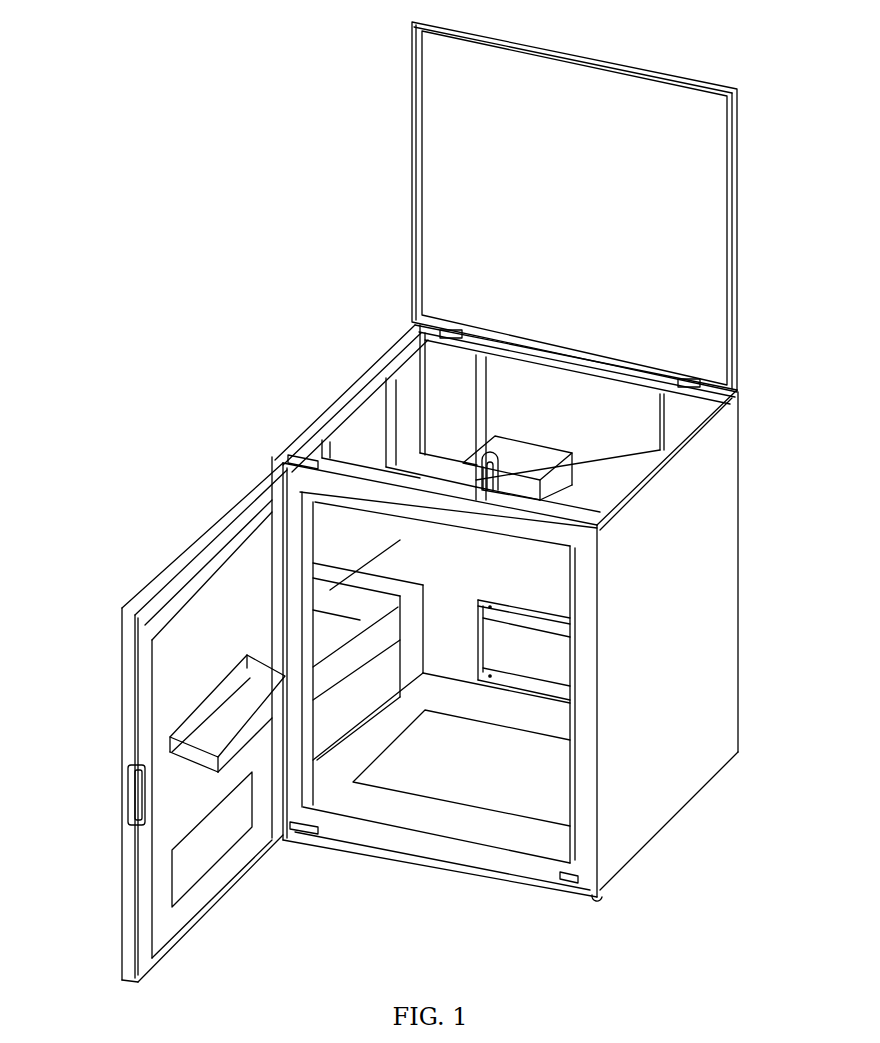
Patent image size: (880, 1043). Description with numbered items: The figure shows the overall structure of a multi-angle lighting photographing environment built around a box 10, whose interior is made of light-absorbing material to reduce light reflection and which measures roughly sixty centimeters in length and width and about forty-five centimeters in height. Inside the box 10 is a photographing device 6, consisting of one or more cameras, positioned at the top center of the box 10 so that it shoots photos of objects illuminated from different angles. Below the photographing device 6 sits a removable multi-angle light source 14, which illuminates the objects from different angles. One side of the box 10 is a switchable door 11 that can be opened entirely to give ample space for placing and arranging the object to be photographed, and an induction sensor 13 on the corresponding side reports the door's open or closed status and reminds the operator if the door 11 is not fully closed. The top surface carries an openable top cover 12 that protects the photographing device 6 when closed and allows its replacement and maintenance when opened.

The top cover 12 is at (750, 340).
The box 10 is at (750, 525).
The photographing device 6 is at (580, 472).
The multi-angle light source 14 is at (557, 641).
The sensor 13 is at (585, 878).
The door 11 is at (115, 718).